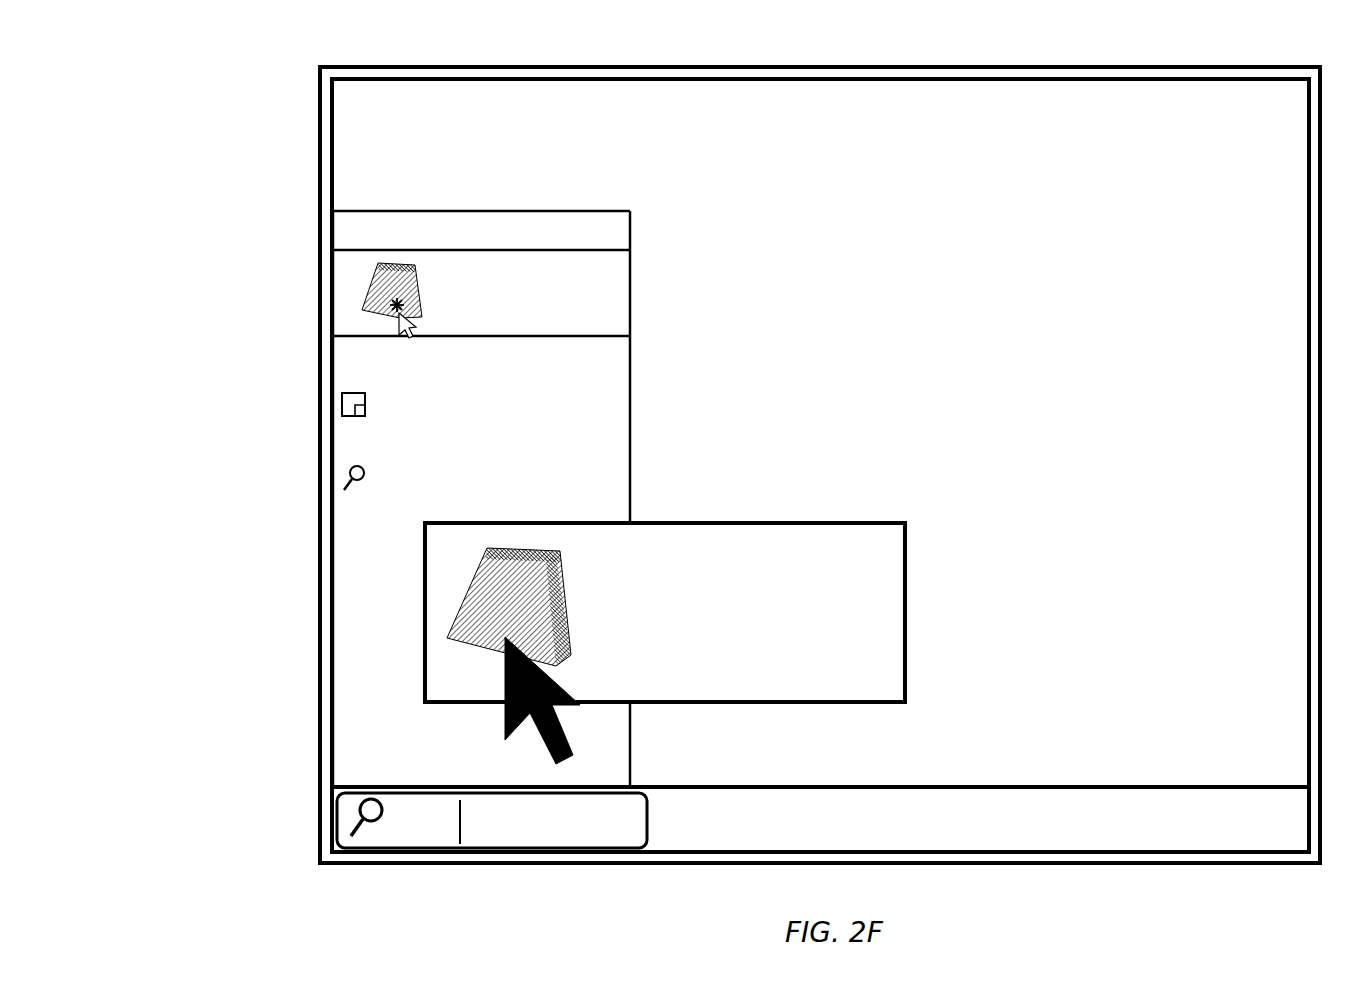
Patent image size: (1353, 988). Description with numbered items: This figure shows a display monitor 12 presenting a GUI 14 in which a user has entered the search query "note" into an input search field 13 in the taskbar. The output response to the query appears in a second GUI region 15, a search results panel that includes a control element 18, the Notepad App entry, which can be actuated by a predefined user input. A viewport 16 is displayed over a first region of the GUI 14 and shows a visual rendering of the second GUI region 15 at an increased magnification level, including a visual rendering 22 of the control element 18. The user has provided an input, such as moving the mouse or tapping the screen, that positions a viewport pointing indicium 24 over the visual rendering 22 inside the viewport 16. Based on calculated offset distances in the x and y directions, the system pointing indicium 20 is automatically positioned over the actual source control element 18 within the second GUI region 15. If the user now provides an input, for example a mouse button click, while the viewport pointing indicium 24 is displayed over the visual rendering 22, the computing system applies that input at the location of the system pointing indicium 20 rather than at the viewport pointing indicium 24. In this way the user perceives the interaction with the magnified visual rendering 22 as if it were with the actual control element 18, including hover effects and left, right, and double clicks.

The display monitor 12 is at (907, 67).
The input search field 13 is at (648, 823).
The GUI 14 is at (333, 533).
The second GUI region 15 is at (549, 247).
The viewport 16 is at (830, 522).
The control element 18 is at (368, 283).
The system pointing indicium 20 is at (404, 313).
The visual rendering of control element 22 is at (460, 593).
The viewport pointing indicium 24 is at (505, 707).